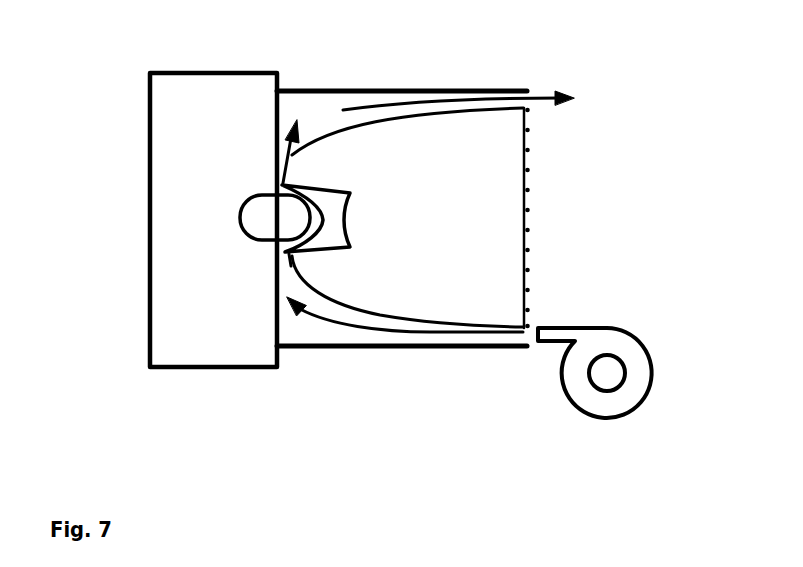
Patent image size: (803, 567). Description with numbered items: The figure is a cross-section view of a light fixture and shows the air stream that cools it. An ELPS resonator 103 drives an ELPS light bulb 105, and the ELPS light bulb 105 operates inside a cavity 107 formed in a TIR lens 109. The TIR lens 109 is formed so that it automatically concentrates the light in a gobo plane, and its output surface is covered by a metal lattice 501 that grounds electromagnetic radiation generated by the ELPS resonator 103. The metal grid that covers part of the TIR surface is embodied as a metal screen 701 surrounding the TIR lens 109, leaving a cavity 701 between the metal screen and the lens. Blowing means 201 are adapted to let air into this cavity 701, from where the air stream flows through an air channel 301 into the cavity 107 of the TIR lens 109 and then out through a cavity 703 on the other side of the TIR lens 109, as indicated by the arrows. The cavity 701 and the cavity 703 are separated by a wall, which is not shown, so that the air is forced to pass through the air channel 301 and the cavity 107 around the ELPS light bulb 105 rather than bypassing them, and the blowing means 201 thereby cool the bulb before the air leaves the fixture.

The ELPS resonator 103 is at (196, 165).
The ELPS light bulb 105 is at (278, 207).
The cavity 107 is at (343, 190).
The TIR lens 109 is at (497, 108).
The blowing means 201 is at (607, 370).
The air channel 301 is at (283, 262).
The metal lattice 501 is at (528, 173).
The cavity 701 is at (303, 333).
The cavity 703 is at (290, 108).